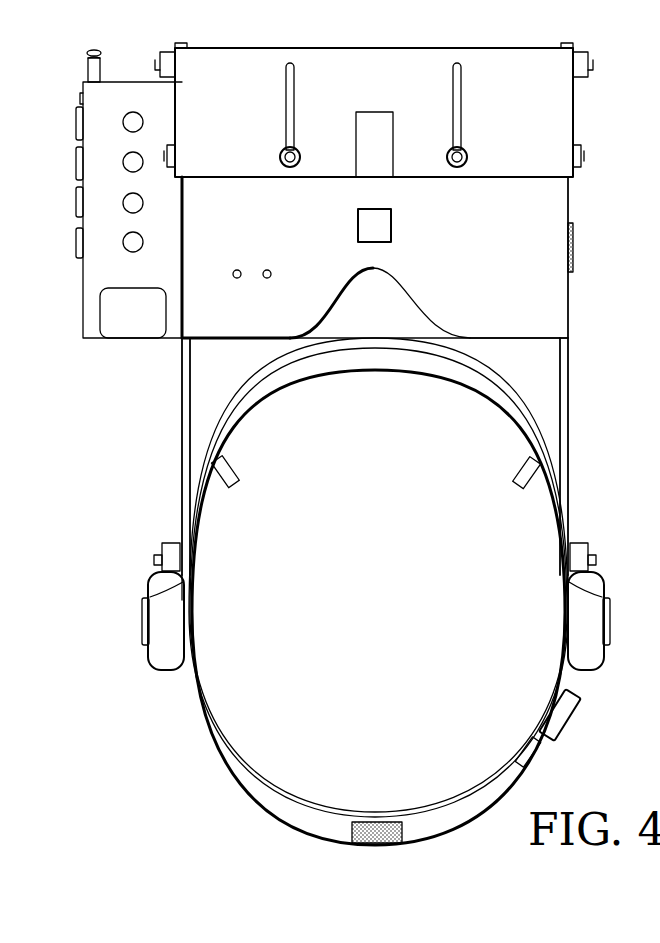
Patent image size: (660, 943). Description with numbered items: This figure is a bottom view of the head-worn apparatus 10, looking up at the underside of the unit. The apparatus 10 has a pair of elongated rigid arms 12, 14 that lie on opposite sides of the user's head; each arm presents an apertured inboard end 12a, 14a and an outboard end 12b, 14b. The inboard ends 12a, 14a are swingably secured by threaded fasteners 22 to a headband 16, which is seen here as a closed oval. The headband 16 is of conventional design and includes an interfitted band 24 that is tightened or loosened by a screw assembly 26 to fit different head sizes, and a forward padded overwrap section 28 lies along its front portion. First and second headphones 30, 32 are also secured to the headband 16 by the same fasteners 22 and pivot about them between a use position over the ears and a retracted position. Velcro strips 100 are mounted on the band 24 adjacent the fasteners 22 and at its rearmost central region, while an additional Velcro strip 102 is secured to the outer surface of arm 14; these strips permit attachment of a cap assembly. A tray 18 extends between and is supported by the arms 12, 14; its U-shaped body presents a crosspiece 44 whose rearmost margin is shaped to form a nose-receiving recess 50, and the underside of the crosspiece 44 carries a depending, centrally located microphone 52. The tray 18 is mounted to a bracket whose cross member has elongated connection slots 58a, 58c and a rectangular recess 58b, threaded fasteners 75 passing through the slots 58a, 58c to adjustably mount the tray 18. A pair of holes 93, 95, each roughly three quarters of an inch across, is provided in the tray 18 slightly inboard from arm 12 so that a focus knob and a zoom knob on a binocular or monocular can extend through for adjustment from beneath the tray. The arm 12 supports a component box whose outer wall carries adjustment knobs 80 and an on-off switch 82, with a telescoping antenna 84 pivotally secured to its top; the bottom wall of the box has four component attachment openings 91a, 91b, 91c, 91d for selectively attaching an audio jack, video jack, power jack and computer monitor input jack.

The apparatus 10 is at (134, 461).
The elongated arm 12 is at (156, 433).
The inboard end of arm 12a is at (150, 606).
The outboard end of arm 12b is at (162, 47).
The elongated arm 14 is at (591, 433).
The inboard end of arm 14a is at (606, 606).
The outboard end of arm 14b is at (583, 46).
The headband 16 is at (216, 804).
The tray 18 is at (583, 113).
The threaded fasteners 22 is at (154, 560).
The band 24 is at (252, 772).
The screw assembly 26 is at (545, 762).
The forward padded overwrap section 28 is at (400, 362).
The first headphone 30 is at (165, 662).
The second headphone 32 is at (590, 660).
The crosspiece 44 is at (550, 197).
The nose-receiving recess 50 is at (398, 283).
The microphone 52 is at (390, 232).
The connection slot 58a is at (294, 112).
The rectangular recess 58b is at (380, 112).
The connection slot 58c is at (461, 112).
The threaded fasteners 75 is at (297, 152).
The adjustment knobs 80 is at (77, 128).
The on-off switch 82 is at (83, 96).
The telescoping antenna 84 is at (88, 68).
The component attachment opening 91a is at (126, 232).
The component attachment opening 91b is at (126, 193).
The component attachment opening 91c is at (126, 152).
The component attachment opening 91d is at (126, 112).
The hole 93 is at (233, 276).
The hole 95 is at (263, 276).
The Velcro strips 100 is at (352, 842).
The Velcro strip 102 is at (573, 262).